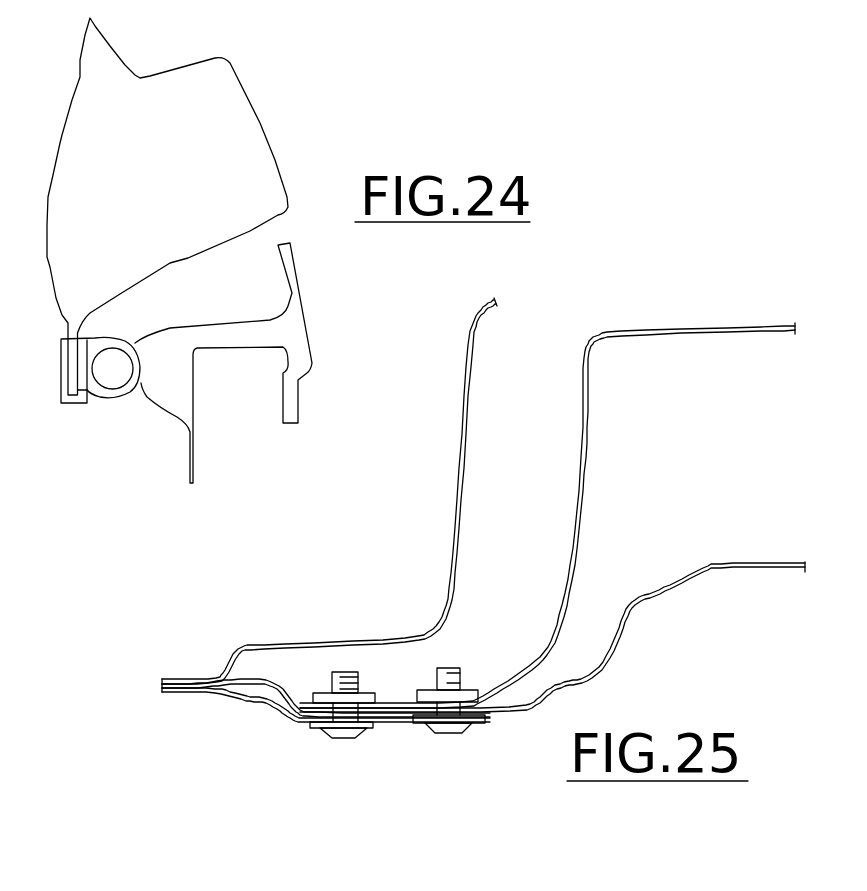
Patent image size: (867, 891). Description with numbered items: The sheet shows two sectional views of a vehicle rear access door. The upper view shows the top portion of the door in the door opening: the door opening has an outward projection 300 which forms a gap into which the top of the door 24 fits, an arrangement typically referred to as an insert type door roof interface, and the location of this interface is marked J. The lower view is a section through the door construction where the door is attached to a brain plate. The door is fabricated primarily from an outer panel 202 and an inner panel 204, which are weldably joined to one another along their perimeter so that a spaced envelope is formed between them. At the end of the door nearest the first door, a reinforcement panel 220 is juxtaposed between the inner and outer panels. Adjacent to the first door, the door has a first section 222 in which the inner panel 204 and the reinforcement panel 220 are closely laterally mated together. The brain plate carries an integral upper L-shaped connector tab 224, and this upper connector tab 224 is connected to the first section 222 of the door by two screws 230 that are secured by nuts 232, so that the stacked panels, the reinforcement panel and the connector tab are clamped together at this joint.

In FIG. 24, the outward projection 300 is at (275, 160).
In FIG. 24, the door 24 is at (308, 312).
In FIG. 24, the juncture J is at (188, 248).
In FIG. 25, the outer panel 202 is at (452, 541).
In FIG. 25, the reinforcement panel 220 is at (578, 560).
In FIG. 25, the inner panel 204 is at (583, 683).
In FIG. 25, the screw 230 is at (452, 668).
In FIG. 25, the nut 232 is at (471, 692).
In FIG. 25, the first section 222 is at (500, 713).
In FIG. 25, the upper L-shaped connector tab 224 is at (397, 723).